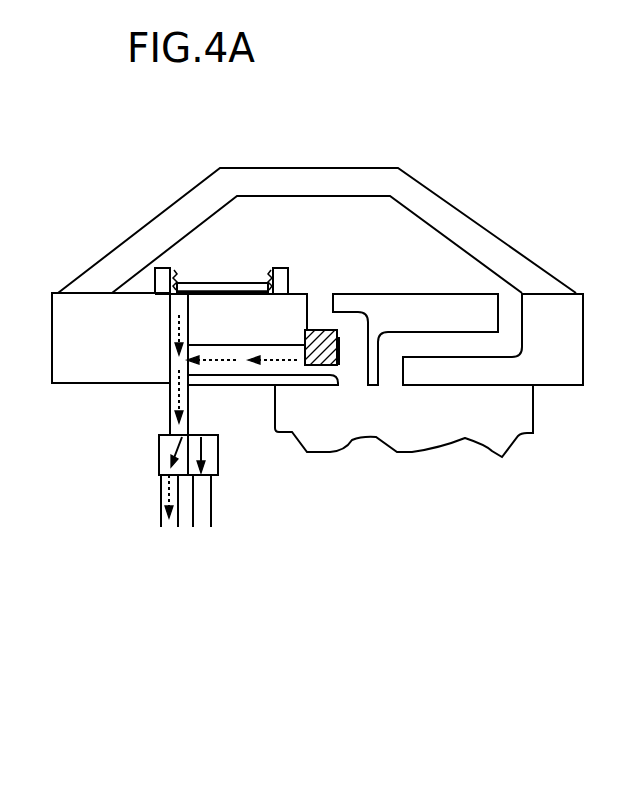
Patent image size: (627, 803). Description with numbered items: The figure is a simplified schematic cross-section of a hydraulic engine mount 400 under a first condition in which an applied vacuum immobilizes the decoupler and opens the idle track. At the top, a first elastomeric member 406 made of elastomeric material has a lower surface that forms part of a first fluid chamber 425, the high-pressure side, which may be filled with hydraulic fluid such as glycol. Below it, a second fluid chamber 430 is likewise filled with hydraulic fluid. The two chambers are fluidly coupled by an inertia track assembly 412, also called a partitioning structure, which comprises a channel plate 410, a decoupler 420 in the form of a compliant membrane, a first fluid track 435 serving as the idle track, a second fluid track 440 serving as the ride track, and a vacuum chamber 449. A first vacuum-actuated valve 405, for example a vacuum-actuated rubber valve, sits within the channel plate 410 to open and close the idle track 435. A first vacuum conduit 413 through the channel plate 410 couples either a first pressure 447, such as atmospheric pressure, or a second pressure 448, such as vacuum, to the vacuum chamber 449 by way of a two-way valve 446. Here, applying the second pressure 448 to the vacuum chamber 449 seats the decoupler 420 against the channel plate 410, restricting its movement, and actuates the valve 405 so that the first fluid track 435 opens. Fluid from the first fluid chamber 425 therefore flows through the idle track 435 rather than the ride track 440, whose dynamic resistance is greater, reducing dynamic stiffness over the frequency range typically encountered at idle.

The engine mount 400 is at (479, 133).
The first vacuum-actuated valve 405 is at (313, 330).
The first elastomeric member 406 is at (360, 168).
The channel plate 410 is at (110, 351).
The inertia track assembly 412 is at (565, 398).
The first vacuum conduit 413 is at (188, 390).
The decoupler 420 is at (212, 282).
The first fluid chamber 425 is at (363, 231).
The second fluid chamber 430 is at (498, 416).
The first fluid track 435 is at (352, 368).
The second fluid track 440 is at (388, 375).
The two-way valve 446 is at (221, 445).
The first pressure 447 is at (208, 525).
The second pressure 448 is at (168, 526).
The vacuum chamber 449 is at (178, 358).